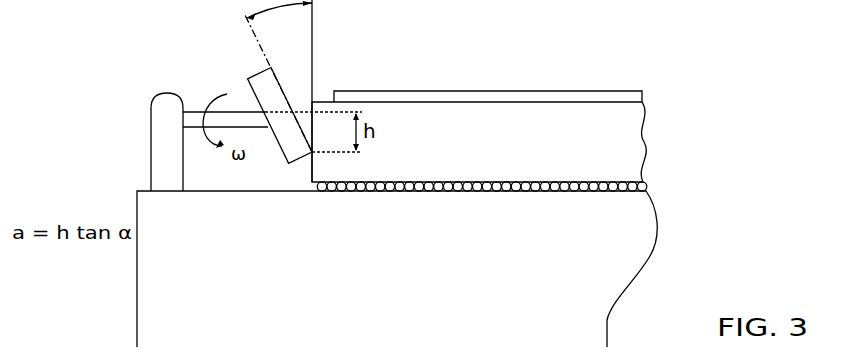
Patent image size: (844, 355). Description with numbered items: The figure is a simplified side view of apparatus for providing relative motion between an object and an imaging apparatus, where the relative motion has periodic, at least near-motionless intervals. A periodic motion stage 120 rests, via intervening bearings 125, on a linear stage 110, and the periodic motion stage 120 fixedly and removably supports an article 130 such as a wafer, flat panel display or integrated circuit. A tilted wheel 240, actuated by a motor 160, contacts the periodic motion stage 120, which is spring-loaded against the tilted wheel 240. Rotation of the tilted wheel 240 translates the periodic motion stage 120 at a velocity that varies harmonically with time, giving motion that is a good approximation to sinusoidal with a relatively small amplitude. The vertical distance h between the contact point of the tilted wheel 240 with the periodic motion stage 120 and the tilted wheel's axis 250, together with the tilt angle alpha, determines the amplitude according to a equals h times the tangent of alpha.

The linear stage 110 is at (432, 267).
The periodic motion stage 120 is at (493, 155).
The bearings 125 is at (647, 187).
The article 130 is at (513, 100).
The motor 160 is at (167, 143).
The tilted wheel 240 is at (267, 90).
The tilted wheel's axis 250 is at (240, 117).